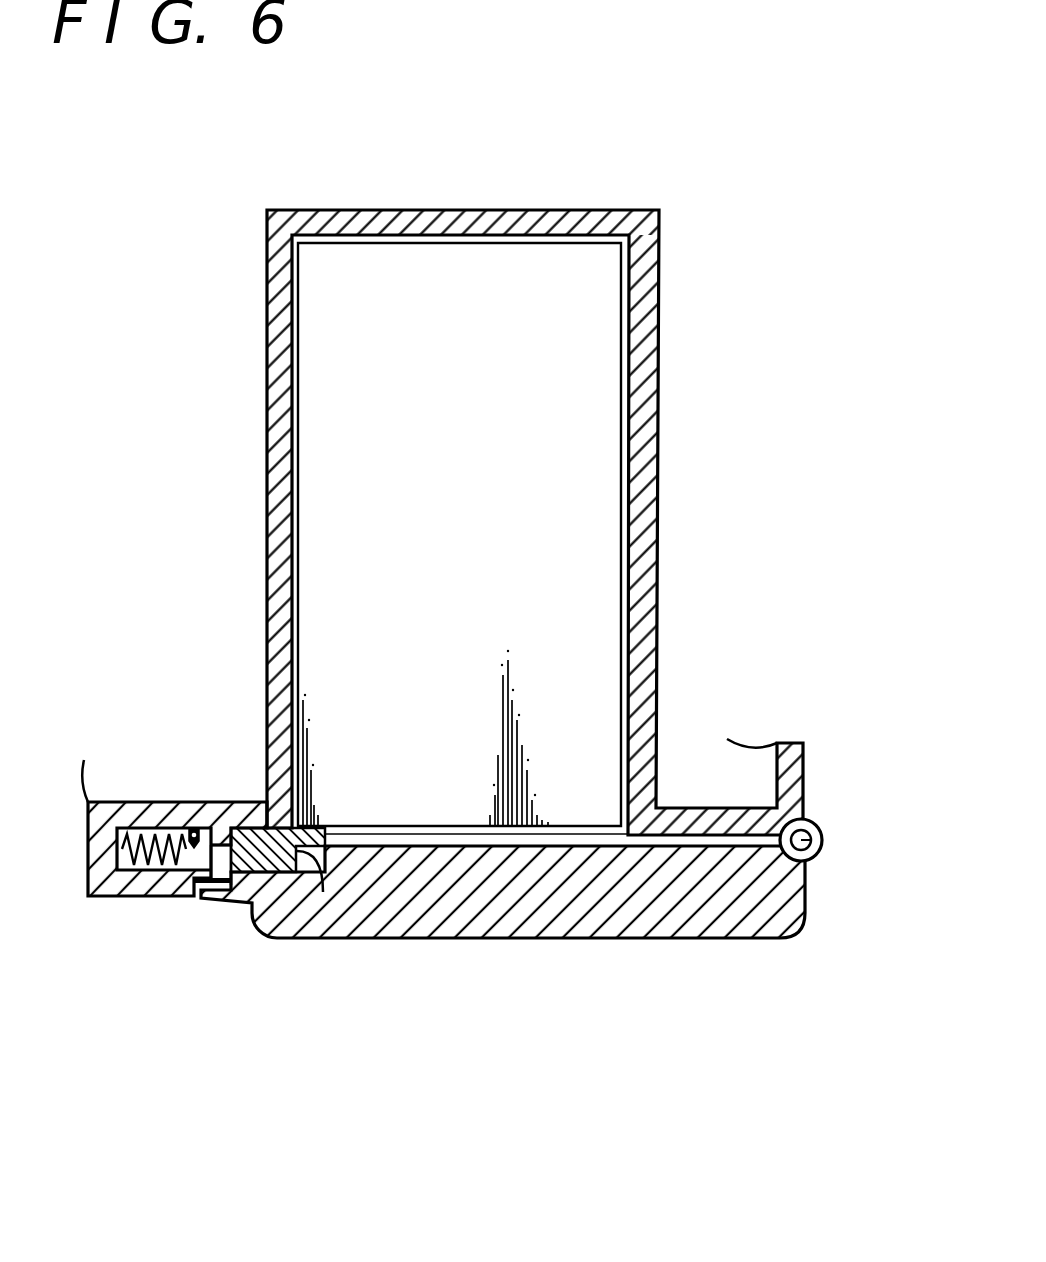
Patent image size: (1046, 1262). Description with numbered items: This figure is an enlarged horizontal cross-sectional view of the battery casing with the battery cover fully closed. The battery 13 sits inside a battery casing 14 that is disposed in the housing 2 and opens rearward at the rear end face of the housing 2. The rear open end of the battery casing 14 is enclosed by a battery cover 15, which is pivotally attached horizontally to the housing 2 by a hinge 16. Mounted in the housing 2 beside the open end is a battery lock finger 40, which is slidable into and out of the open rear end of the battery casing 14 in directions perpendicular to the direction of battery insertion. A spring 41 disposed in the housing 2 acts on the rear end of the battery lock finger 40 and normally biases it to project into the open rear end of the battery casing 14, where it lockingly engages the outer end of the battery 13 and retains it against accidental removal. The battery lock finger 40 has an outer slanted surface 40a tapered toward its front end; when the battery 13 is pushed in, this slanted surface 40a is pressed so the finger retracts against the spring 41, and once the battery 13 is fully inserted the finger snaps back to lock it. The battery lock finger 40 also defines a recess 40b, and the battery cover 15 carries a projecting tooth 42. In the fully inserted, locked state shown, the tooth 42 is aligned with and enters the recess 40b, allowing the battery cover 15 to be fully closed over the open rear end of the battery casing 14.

The housing 2 is at (133, 898).
The battery 13 is at (462, 773).
The battery casing 14 is at (622, 745).
The battery cover 15 is at (570, 917).
The hinge 16 is at (823, 845).
The battery lock finger 40 is at (268, 929).
The slanted surface 40a is at (320, 862).
The recess 40b is at (193, 832).
The spring 41 is at (135, 833).
The tooth 42 is at (218, 833).